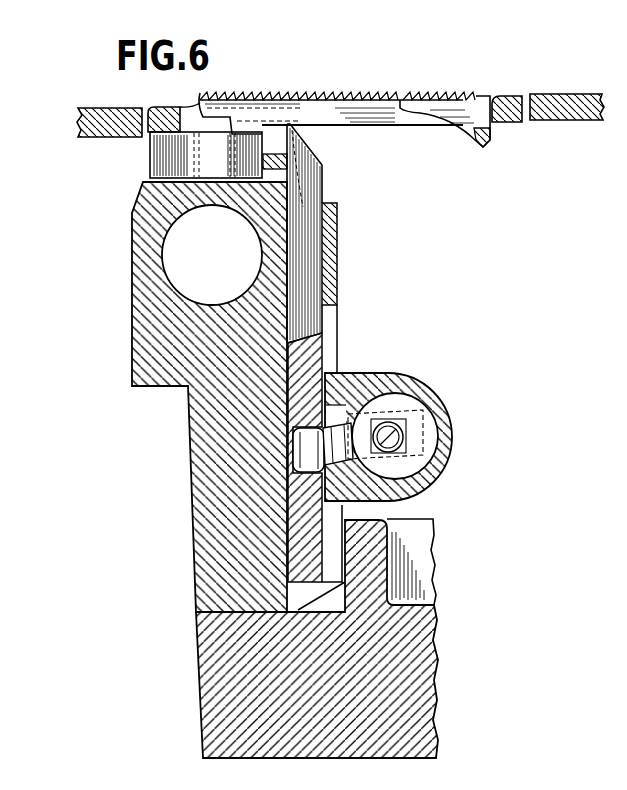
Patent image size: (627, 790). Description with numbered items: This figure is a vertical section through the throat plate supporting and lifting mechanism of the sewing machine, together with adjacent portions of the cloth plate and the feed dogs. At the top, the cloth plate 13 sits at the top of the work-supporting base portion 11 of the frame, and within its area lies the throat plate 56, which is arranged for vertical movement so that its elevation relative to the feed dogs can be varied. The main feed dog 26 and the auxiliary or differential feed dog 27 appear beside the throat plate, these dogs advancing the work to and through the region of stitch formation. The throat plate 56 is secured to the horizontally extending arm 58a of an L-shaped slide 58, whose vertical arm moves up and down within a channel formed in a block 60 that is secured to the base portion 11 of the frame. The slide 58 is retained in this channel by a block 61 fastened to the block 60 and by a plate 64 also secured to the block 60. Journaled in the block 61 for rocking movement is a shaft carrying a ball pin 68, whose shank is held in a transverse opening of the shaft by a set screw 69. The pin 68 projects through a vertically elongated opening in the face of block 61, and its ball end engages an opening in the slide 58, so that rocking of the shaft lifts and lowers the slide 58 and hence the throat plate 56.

The work-supporting base portion 11 is at (218, 693).
The cloth plate 13 is at (573, 100).
The main feed dog 26 is at (450, 92).
The auxiliary or differential feed dog 27 is at (235, 118).
The throat plate 56 is at (512, 98).
The L-shaped slide 58 is at (310, 197).
The horizontally extending arm 58a is at (185, 156).
The block 60 is at (205, 452).
The block 61 is at (433, 397).
The plate 64 is at (332, 247).
The ball pin 68 is at (342, 423).
The set screw 69 is at (404, 455).